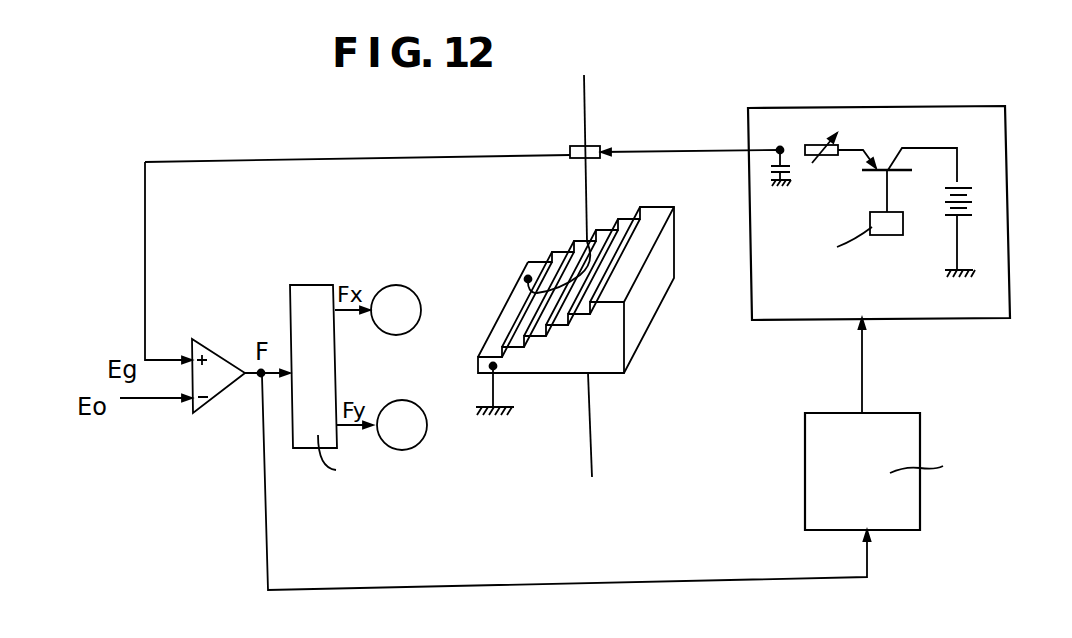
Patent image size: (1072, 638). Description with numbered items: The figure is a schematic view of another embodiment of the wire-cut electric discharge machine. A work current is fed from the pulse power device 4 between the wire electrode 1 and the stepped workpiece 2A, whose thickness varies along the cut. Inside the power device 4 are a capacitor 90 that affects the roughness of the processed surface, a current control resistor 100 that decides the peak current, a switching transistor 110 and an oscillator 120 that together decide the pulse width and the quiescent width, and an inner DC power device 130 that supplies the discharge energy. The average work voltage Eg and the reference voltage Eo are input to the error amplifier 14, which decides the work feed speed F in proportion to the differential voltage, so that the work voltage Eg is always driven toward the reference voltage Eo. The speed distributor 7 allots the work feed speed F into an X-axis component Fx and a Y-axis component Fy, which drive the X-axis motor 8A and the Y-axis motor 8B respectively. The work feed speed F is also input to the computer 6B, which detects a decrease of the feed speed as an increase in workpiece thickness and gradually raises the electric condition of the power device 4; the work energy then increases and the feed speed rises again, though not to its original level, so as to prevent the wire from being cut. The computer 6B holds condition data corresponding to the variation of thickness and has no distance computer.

The error amplifier 14 is at (220, 357).
The speed distributor 7 is at (312, 285).
The X-axis motor 8A is at (413, 285).
The Y-axis motor 8B is at (418, 403).
The wire electrode 1 is at (578, 276).
The workpiece 2A is at (641, 315).
The power device 4 is at (788, 307).
The computer 6B is at (903, 412).
The capacitor 90 is at (766, 172).
The current control resistor 100 is at (829, 171).
The switching transistor 110 is at (885, 155).
The oscillator 120 is at (884, 236).
The inner DC power device 130 is at (973, 207).